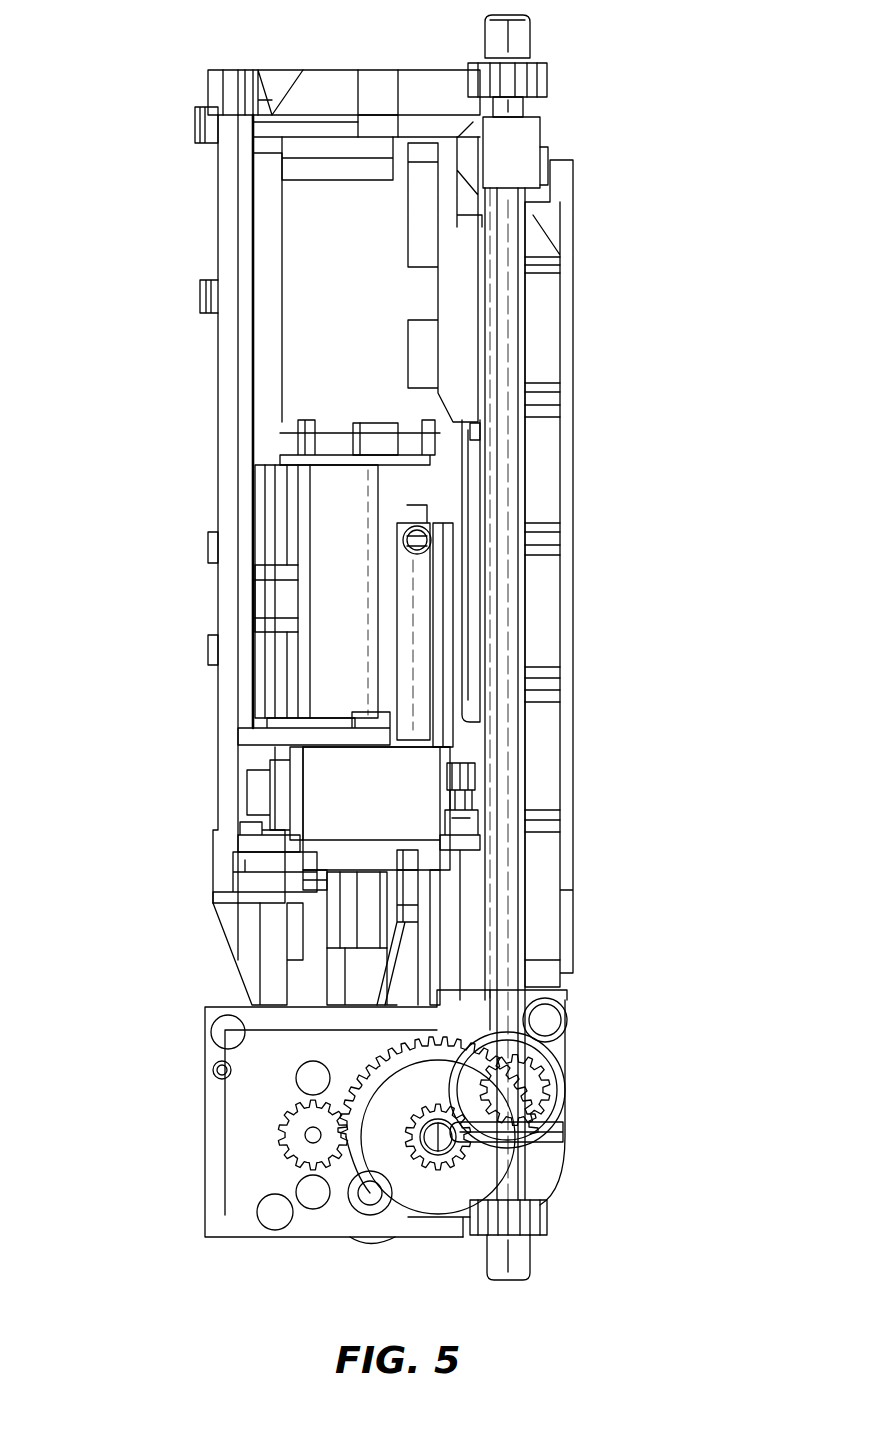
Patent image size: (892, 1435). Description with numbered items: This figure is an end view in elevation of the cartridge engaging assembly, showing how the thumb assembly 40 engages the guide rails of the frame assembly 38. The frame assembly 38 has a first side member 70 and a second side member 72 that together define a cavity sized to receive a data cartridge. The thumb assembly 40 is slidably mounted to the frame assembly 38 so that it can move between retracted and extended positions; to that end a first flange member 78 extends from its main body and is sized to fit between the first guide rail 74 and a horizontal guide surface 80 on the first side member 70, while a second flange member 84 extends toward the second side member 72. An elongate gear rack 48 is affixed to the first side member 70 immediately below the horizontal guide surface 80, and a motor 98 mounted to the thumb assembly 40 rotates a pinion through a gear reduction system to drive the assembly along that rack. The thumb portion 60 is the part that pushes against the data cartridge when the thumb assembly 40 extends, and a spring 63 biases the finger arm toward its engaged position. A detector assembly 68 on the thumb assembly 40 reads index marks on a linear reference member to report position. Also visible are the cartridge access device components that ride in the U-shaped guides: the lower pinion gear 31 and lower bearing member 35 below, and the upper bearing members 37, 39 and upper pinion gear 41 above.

The lower pinion gear 31 is at (547, 1225).
The lower bearing member 35 is at (530, 1250).
The upper bearing member 37 is at (208, 85).
The frame assembly 38 is at (215, 214).
The upper bearing member 39 is at (530, 40).
The thumb assembly 40 is at (256, 494).
The upper pinion gear 41 is at (547, 78).
The gear rack 48 is at (312, 950).
The thumb portion 60 is at (392, 802).
The spring 63 is at (433, 602).
The detector assembly 68 is at (253, 782).
The first side member 70 is at (218, 388).
The second side member 72 is at (573, 245).
The first guide rail 74 is at (247, 820).
The first flange member 78 is at (233, 883).
The horizontal guide surface 80 is at (310, 872).
The second flange member 84 is at (477, 822).
The motor 98 is at (370, 423).